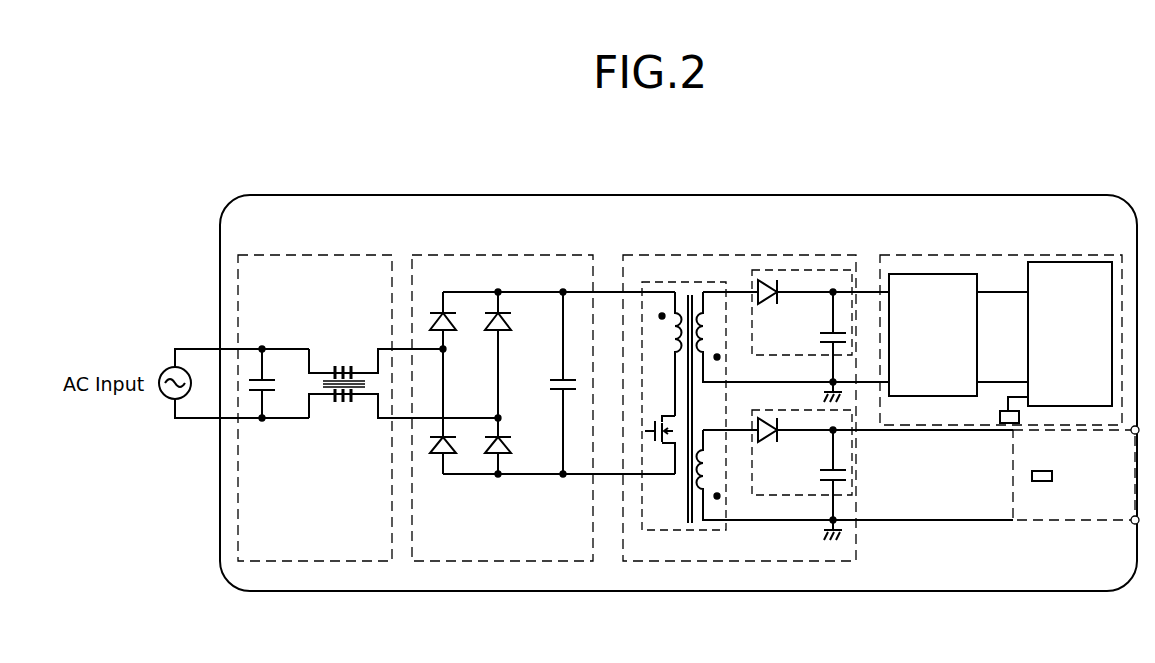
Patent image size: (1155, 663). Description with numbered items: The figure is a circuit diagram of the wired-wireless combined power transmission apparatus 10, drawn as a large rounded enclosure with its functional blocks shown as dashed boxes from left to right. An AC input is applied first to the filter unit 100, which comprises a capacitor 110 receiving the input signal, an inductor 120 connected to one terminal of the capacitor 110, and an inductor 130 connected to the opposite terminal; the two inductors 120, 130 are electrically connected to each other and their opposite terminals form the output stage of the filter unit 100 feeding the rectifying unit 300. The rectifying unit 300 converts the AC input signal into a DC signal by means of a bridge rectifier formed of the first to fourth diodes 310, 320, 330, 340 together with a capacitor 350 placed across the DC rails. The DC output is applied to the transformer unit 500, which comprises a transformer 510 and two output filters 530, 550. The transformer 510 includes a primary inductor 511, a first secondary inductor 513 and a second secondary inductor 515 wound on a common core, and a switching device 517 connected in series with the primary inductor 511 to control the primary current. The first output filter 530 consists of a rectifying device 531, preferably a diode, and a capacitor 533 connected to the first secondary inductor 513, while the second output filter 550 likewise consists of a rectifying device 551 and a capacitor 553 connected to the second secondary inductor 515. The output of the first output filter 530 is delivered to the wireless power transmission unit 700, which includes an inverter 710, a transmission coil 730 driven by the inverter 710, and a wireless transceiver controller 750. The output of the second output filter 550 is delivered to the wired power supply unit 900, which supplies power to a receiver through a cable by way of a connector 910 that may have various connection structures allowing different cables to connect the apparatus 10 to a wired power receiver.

The wired-wireless combined power transmission apparatus 10 is at (443, 195).
The filter unit 100 is at (330, 255).
The capacitor 110 is at (270, 393).
The inductor 120 is at (340, 365).
The inductor 130 is at (342, 403).
The rectifying unit 300 is at (503, 255).
The first diode 310 is at (439, 311).
The second diode 320 is at (504, 321).
The third diode 330 is at (440, 457).
The fourth diode 340 is at (495, 457).
The smoothing capacitor 350 is at (557, 379).
The transformer unit 500 is at (749, 255).
The transformer 510 is at (823, 372).
The primary inductor 511 is at (657, 354).
The first secondary inductor 513 is at (793, 337).
The second secondary inductor 515 is at (855, 475).
The switching device 517 is at (656, 445).
The first output filter 530 is at (820, 309).
The rectifying device 531 is at (822, 303).
The capacitor 533 is at (823, 345).
The second output filter 550 is at (882, 480).
The rectifying device 551 is at (884, 442).
The capacitor 553 is at (823, 483).
The wireless power transmission unit 700 is at (1001, 320).
The inverter 710 is at (935, 396).
The transmission coil 730 is at (1068, 262).
The wireless transceiver controller 750 is at (1019, 414).
The wired power supply unit 900 is at (1076, 495).
The connector 910 is at (1052, 476).